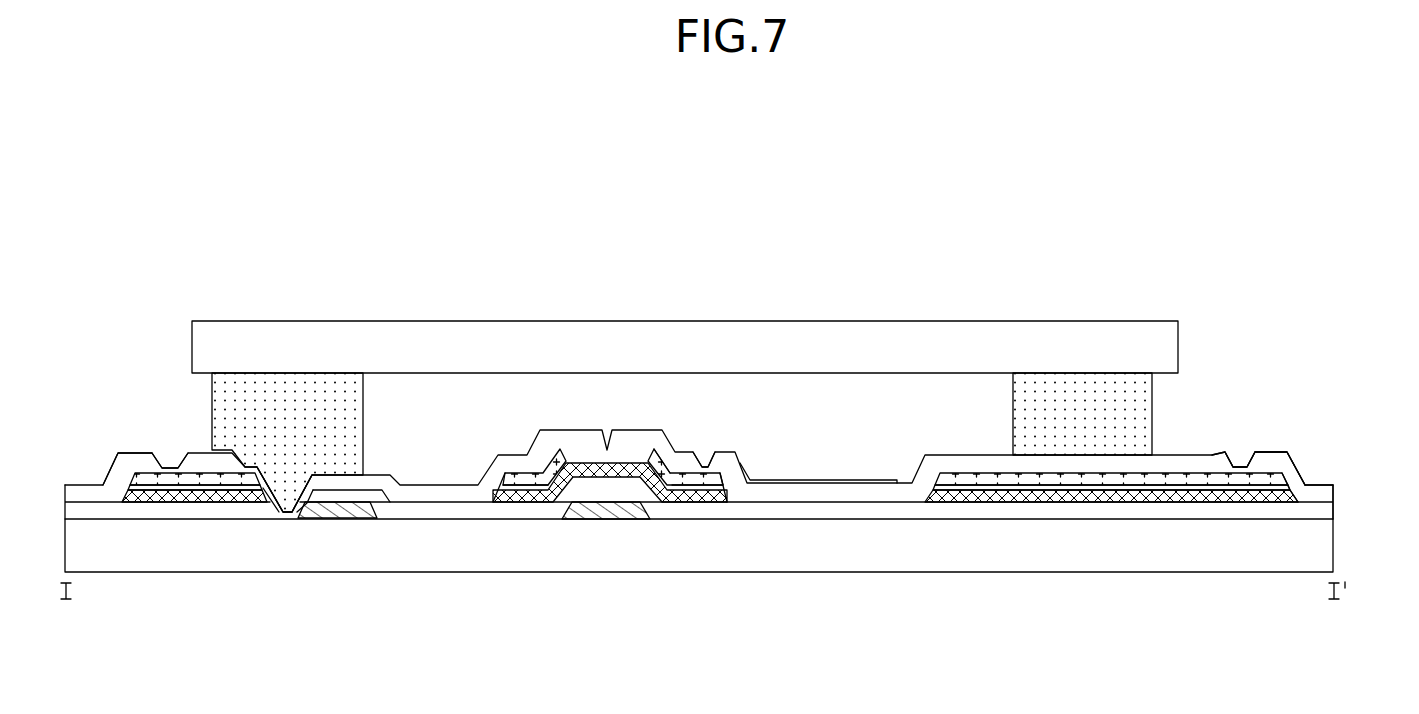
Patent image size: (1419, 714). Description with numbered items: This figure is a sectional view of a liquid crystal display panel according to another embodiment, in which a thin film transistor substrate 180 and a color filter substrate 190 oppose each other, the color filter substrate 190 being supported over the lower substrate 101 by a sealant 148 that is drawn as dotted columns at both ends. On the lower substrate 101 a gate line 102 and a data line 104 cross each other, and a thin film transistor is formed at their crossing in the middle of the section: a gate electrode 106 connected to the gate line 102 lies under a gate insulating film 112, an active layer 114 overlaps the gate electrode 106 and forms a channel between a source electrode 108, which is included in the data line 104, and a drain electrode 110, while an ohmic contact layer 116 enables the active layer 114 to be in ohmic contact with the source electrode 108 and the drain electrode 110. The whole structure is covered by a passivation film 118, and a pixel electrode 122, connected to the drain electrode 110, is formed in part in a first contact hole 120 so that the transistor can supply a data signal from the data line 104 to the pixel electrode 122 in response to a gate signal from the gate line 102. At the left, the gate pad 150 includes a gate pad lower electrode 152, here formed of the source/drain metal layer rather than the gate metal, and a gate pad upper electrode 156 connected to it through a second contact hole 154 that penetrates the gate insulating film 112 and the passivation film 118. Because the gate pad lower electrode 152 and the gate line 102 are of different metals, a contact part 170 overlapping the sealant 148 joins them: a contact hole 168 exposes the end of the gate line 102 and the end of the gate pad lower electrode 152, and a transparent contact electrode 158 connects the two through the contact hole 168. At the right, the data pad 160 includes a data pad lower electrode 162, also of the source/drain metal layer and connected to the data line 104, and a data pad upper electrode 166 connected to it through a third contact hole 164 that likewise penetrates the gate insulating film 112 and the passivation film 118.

The lower substrate 101 is at (1333, 550).
The gate line 102 is at (376, 516).
The data line 104 is at (946, 498).
The gate electrode 106 is at (620, 516).
The source electrode 108 is at (513, 501).
The drain electrode 110 is at (728, 501).
The gate insulating film 112 is at (1333, 510).
The active layer 114 is at (193, 498).
The ohmic contact layer 116 is at (262, 481).
The passivation film 118 is at (1333, 490).
The first contact hole 120 is at (708, 458).
The pixel electrode 122 is at (741, 463).
The sealant 148 is at (1150, 425).
The gate pad 150 is at (124, 360).
The gate pad lower electrode 152 is at (140, 483).
The second contact hole 154 is at (166, 450).
The gate pad upper electrode 156 is at (135, 455).
The contact electrode 158 is at (291, 516).
The data pad 160 is at (1284, 400).
The data pad lower electrode 162 is at (1230, 480).
The third contact hole 164 is at (1237, 452).
The data pad upper electrode 166 is at (1265, 453).
The contact hole 168 is at (303, 513).
The contact part 170 is at (326, 635).
The thin film transistor substrate 180 is at (1347, 472).
The color filter substrate 190 is at (1170, 352).